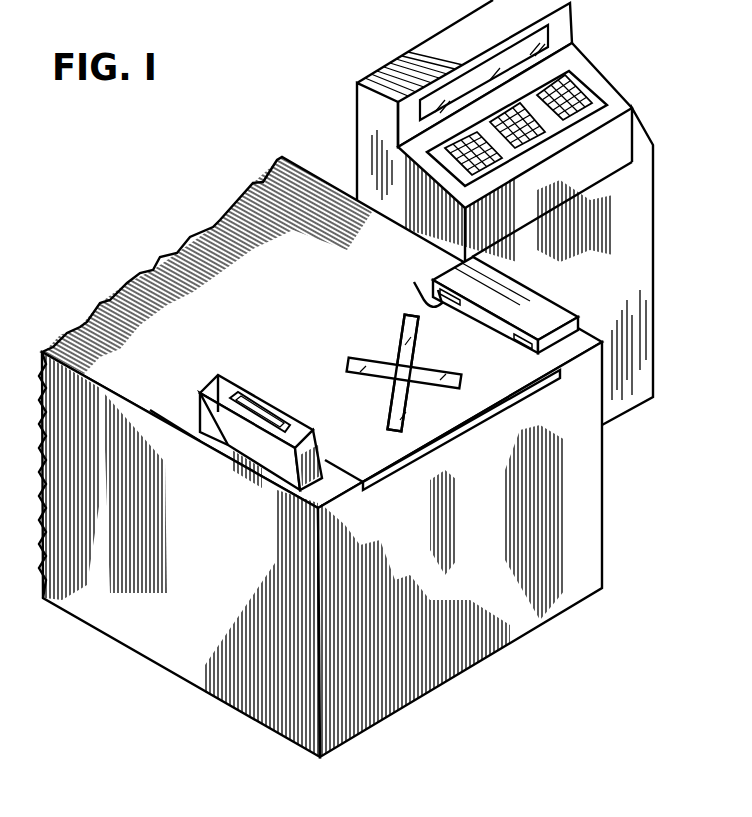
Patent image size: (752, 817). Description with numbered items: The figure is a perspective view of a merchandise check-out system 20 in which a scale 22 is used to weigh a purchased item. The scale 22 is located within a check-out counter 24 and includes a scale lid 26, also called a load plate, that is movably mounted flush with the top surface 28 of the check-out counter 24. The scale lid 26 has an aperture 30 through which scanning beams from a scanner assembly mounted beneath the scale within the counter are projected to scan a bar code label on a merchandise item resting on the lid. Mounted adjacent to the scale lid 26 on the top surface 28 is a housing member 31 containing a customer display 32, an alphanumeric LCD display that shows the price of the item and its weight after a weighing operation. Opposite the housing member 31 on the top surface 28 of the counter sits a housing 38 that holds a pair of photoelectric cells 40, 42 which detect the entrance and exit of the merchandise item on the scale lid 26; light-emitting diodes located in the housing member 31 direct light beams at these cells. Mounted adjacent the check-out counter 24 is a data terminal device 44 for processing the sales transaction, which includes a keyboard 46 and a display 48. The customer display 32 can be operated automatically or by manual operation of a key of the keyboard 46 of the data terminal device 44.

The merchandise check-out system 20 is at (321, 155).
The scale 22 is at (296, 343).
The check-out counter 24 is at (593, 527).
The scale lid 26 is at (422, 435).
The top surface 28 is at (165, 277).
The aperture 30 is at (450, 367).
The housing member 31 is at (262, 453).
The customer display 32 is at (232, 438).
The housing 38 is at (523, 295).
The photoelectric cell 40 is at (428, 285).
The photoelectric cell 42 is at (562, 310).
The data terminal device 44 is at (620, 137).
The keyboard 46 is at (585, 84).
The display 48 is at (547, 38).